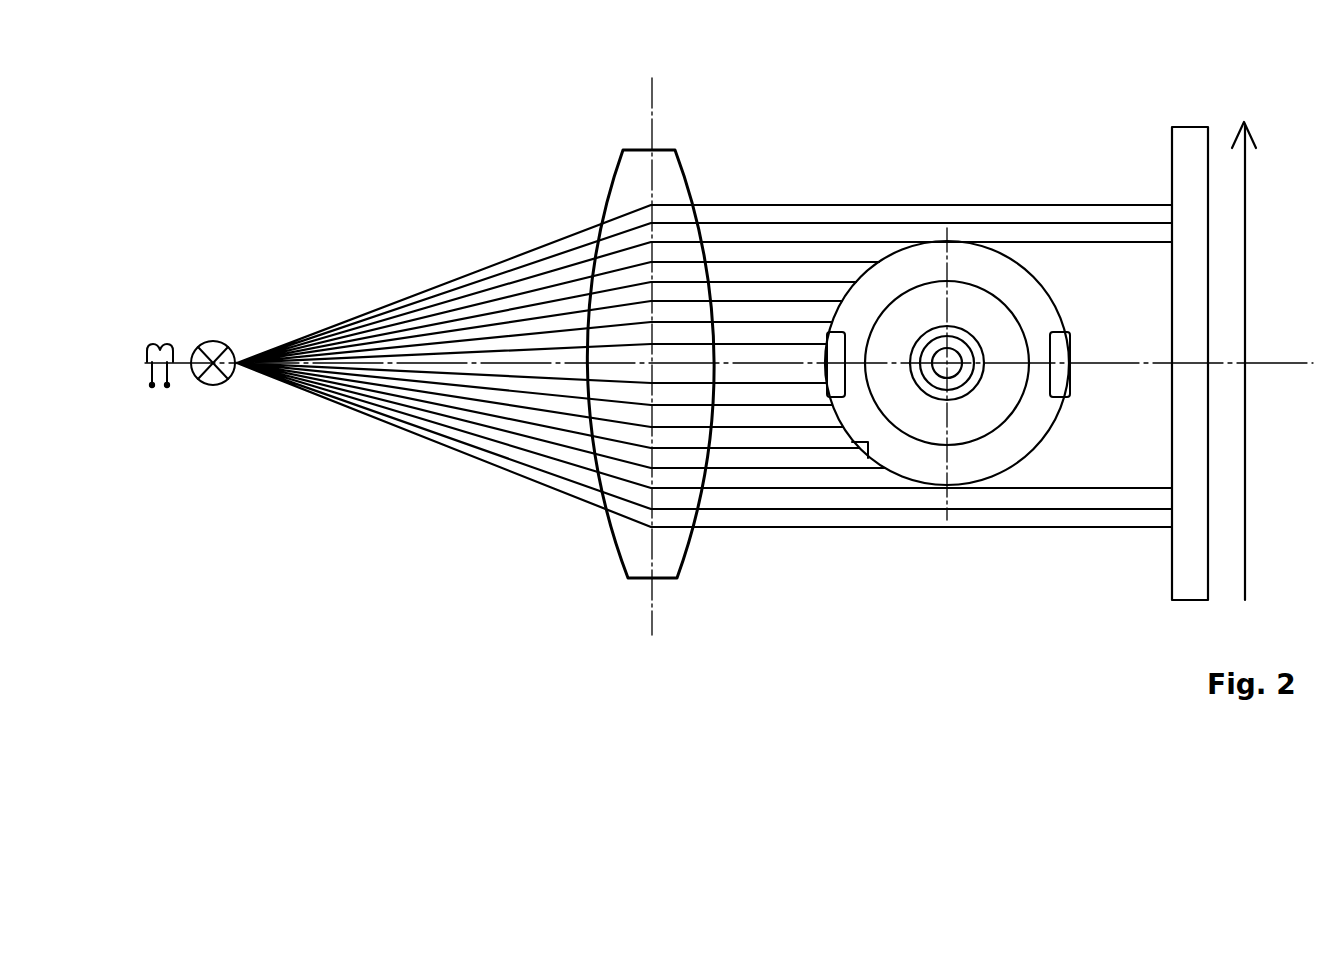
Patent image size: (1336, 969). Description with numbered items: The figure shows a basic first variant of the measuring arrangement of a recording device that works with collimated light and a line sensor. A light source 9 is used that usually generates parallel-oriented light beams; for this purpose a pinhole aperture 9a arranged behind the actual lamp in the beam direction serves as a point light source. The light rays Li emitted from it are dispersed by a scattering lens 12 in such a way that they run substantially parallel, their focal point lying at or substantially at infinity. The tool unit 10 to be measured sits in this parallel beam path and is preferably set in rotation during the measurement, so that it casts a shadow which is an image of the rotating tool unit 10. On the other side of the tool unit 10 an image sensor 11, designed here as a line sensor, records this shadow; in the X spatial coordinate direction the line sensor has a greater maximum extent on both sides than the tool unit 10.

The light source 9 is at (160, 344).
The pinhole aperture 9a is at (211, 378).
The light rays Li is at (427, 287).
The scattering lens 12 is at (628, 180).
The tool unit to be measured 10 is at (890, 458).
The image sensor 11 is at (1182, 553).
The X spatial coordinate direction X is at (1245, 229).